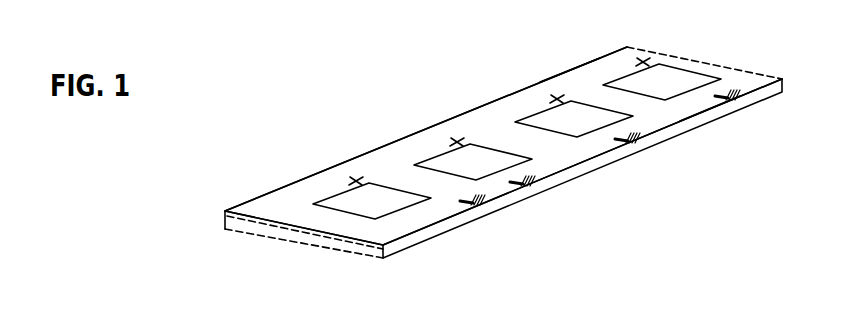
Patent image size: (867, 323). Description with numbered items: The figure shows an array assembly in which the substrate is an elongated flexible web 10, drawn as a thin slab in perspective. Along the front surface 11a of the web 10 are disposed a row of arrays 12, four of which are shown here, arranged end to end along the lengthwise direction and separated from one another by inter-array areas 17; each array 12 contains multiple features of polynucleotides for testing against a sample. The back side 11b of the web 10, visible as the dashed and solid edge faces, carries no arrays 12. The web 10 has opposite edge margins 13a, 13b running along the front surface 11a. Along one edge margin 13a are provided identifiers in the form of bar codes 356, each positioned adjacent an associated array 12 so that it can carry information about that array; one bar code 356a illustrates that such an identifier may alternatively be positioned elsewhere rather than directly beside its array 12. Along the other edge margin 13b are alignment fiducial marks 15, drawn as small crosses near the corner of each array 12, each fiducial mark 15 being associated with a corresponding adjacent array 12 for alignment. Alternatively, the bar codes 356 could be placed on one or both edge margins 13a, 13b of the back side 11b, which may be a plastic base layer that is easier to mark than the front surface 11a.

The web 10 is at (473, 175).
The front surface 11a is at (280, 198).
The back side 11b is at (567, 184).
The array 12 is at (365, 193).
The edge margin 13a is at (697, 108).
The edge margin 13b is at (562, 88).
The alignment fiducial mark 15 is at (357, 178).
The inter-array area 17 is at (437, 188).
The bar code 356 is at (524, 184).
The bar code 356a is at (479, 201).